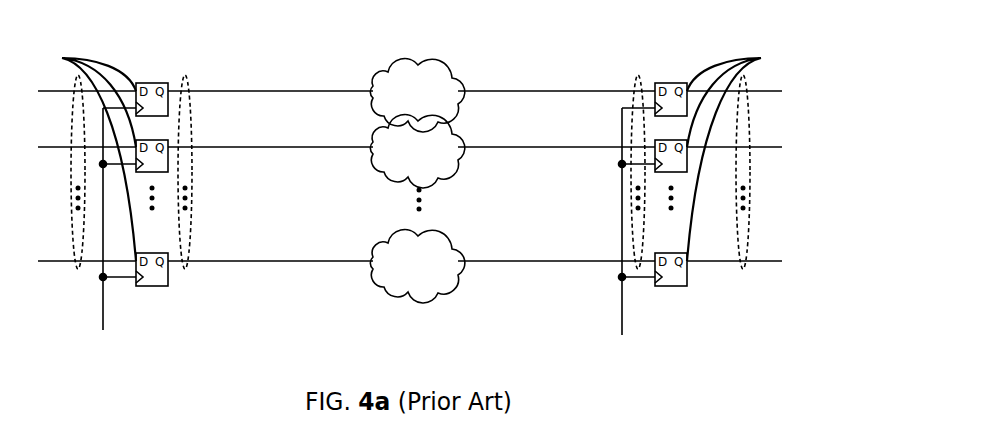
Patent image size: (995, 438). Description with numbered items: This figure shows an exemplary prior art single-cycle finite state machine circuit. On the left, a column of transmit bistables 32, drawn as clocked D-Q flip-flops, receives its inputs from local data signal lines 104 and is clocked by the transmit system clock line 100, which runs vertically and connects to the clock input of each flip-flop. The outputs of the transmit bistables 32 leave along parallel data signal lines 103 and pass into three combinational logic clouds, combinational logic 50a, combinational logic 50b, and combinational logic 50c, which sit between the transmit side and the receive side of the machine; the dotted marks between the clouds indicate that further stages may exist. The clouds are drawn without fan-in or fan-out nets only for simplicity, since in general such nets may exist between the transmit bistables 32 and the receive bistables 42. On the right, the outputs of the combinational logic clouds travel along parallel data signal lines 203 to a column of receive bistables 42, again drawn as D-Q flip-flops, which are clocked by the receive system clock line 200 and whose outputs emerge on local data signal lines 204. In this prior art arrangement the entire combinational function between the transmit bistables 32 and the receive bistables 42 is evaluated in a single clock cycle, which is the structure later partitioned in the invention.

The transmit bistables 32 is at (88, 156).
The receive bistables 42 is at (735, 156).
The combinational logic 50a is at (402, 77).
The combinational logic 50b is at (395, 132).
The combinational logic 50c is at (386, 245).
The transmit system clock line 100 is at (103, 327).
The parallel data signal lines 103 is at (185, 277).
The local data signal lines 104 is at (78, 277).
The receive system clock line 200 is at (622, 327).
The parallel data signal lines 203 is at (638, 277).
The local data signal lines 204 is at (743, 277).